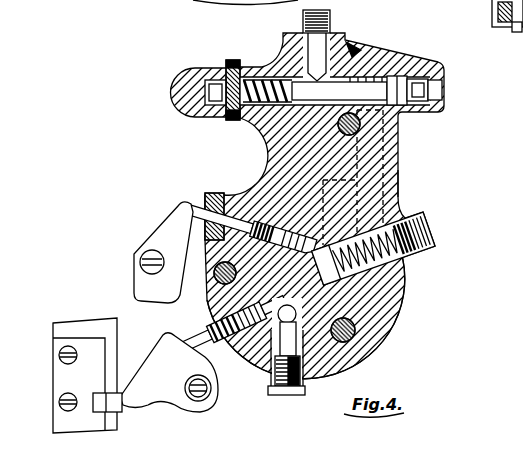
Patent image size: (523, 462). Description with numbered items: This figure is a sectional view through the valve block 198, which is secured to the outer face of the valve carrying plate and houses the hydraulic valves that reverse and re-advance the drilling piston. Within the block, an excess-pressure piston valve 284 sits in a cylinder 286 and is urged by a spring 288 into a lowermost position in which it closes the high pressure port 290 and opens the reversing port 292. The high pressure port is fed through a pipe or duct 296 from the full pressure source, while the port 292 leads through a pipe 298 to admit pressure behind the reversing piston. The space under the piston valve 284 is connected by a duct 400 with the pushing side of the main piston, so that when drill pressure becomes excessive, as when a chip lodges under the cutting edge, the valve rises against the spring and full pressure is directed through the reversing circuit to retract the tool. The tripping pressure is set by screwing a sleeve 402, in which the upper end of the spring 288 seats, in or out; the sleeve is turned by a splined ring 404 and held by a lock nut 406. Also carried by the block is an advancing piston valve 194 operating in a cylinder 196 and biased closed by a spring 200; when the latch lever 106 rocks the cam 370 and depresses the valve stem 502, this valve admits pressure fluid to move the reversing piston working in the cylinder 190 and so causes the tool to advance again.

The latch lever 106 is at (117, 410).
The cylinder 190 is at (509, 31).
The piston valve 194 is at (338, 277).
The cylinder 196 is at (383, 264).
The valve block 198 is at (372, 350).
The spring 200 is at (392, 262).
The piston valve 284 is at (396, 78).
The cylinder 286 is at (399, 117).
The spring 288 is at (262, 68).
The high pressure port 290 is at (364, 78).
The reversing port 292 is at (425, 78).
The pipe or duct 296 is at (399, 186).
The pipe 298 is at (399, 151).
The cam 370 is at (158, 350).
The duct or pipe 400 is at (444, 85).
The sleeve 402 is at (226, 70).
The ring 404 is at (233, 119).
The lock nut 406 is at (170, 93).
The valve stem 502 is at (212, 390).